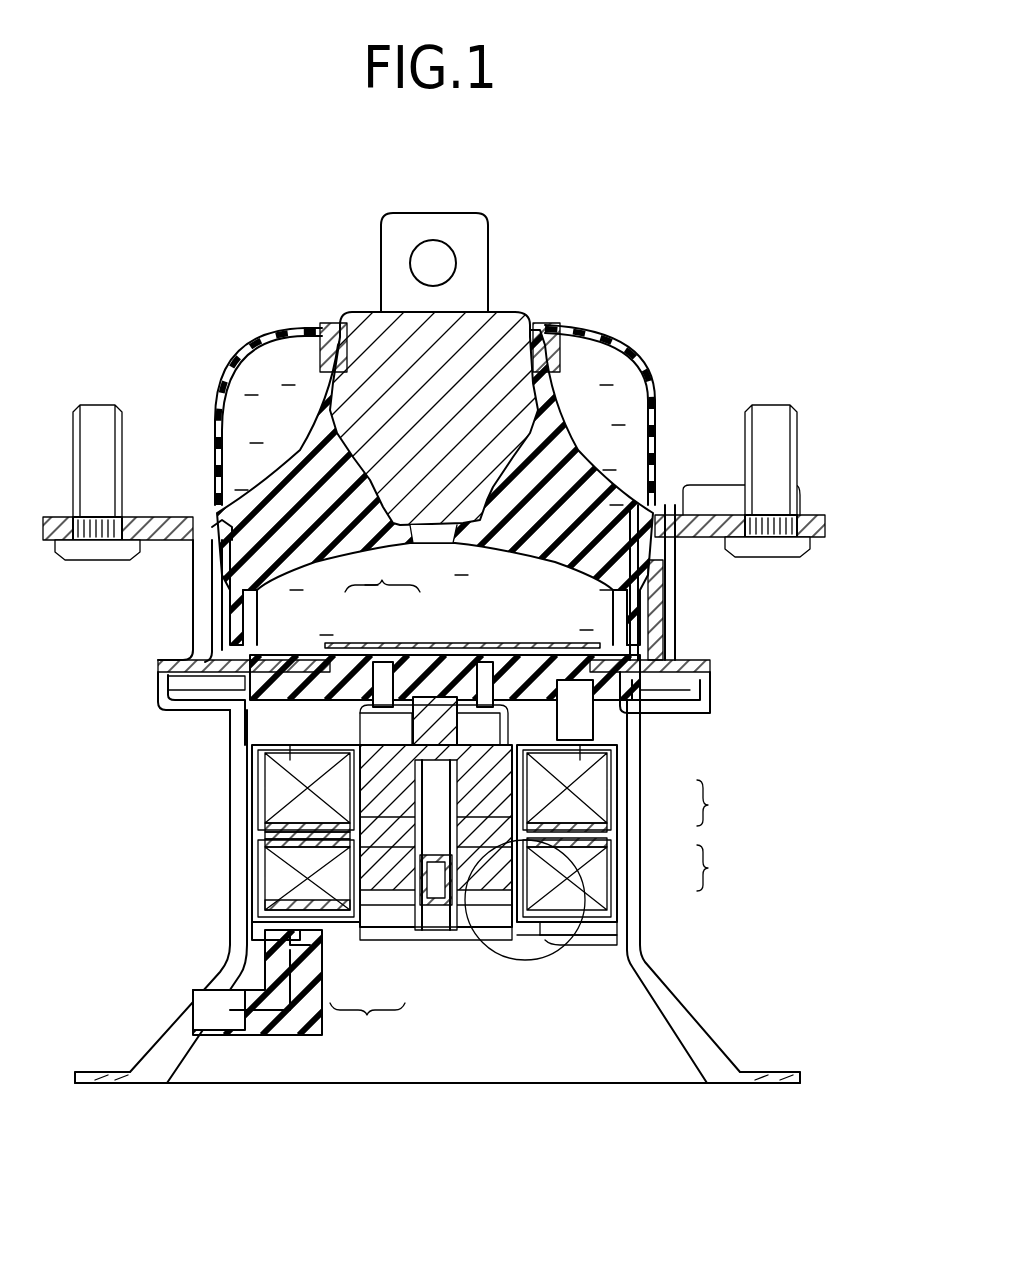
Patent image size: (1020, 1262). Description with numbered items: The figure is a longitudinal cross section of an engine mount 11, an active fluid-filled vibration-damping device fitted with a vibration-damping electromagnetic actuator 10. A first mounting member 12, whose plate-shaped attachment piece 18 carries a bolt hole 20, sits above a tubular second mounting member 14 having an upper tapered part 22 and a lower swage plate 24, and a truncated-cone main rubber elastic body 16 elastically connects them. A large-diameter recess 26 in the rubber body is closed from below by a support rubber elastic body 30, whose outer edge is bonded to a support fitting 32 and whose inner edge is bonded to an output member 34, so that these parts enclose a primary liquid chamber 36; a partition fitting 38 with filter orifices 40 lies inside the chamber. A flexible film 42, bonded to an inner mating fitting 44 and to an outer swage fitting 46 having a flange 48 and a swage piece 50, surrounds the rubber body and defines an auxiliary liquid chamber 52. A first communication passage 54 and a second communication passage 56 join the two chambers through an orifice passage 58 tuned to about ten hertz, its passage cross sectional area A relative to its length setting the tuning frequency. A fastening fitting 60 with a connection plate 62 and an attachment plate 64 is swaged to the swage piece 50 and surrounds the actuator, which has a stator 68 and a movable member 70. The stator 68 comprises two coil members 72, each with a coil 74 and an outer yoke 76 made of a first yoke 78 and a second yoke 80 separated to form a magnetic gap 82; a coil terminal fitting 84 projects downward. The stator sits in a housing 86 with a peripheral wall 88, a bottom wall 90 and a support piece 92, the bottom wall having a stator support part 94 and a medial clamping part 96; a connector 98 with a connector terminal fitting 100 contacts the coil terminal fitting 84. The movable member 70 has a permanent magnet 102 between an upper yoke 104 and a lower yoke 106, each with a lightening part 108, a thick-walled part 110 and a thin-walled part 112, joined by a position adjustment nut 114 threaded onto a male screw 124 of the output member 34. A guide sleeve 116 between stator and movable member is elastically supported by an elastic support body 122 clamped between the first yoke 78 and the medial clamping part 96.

The vibration-damping electromagnetic actuator 10 is at (330, 730).
The engine mount 11 is at (672, 305).
The first mounting member 12 is at (505, 305).
The second mounting member 14 is at (226, 580).
The main rubber elastic body 16 is at (556, 450).
The attachment piece 18 is at (393, 247).
The bolt hole 20 is at (432, 247).
The tapered part 22 is at (232, 545).
The swage plate 24 is at (195, 666).
The large-diameter recess 26 is at (630, 575).
The support rubber elastic body 30 is at (540, 685).
The support fitting 32 is at (680, 663).
The output member 34 is at (445, 740).
The primary liquid chamber 36 is at (451, 598).
The partition fitting 38 is at (548, 660).
The filter orifices 40 is at (470, 643).
The flexible film 42 is at (255, 352).
The inner mating fitting 44 is at (318, 325).
The outer swage fitting 46 is at (190, 618).
The flange 48 is at (146, 530).
The swage piece 50 is at (160, 690).
The auxiliary liquid chamber 52 is at (265, 437).
The first communication passage 54 is at (640, 603).
The second communication passage 56 is at (268, 492).
The orifice passage 58 is at (650, 625).
The fastening fitting 60 is at (225, 927).
The connection plate 62 is at (200, 702).
The attachment plate 64 is at (108, 1078).
The stator 68 is at (257, 740).
The movable member 70 is at (478, 915).
The coil member 72 is at (610, 927).
The coil 74 is at (620, 917).
The outer yoke 76 is at (715, 835).
The first yoke 78 is at (600, 860).
The second yoke 80 is at (555, 845).
The magnetic gap 82 is at (345, 805).
The coil terminal fitting 84 is at (290, 940).
The housing 86 is at (240, 790).
The peripheral wall 88 is at (265, 757).
The bottom wall 90 is at (515, 920).
The support piece 92 is at (660, 690).
The stator support part 94 is at (595, 930).
The medial clamping part 96 is at (558, 935).
The connector 98 is at (312, 1032).
The connector terminal fitting 100 is at (235, 1013).
The permanent magnet 102 is at (436, 890).
The upper yoke 104 is at (382, 577).
The lower yoke 106 is at (410, 860).
The lightening part 108 is at (490, 765).
The thick-walled part 110 is at (365, 740).
The thin-walled part 112 is at (395, 800).
The position adjustment nut 114 is at (433, 905).
The guide sleeve 116 is at (350, 870).
The elastic support body 122 is at (530, 930).
The male screw 124 is at (350, 830).
The passage cross sectional area A is at (560, 940).